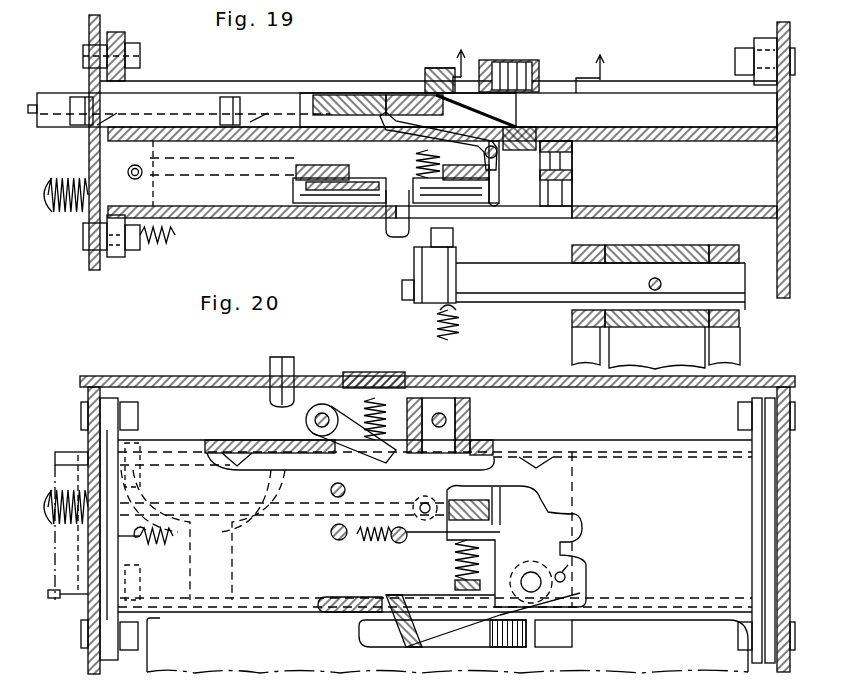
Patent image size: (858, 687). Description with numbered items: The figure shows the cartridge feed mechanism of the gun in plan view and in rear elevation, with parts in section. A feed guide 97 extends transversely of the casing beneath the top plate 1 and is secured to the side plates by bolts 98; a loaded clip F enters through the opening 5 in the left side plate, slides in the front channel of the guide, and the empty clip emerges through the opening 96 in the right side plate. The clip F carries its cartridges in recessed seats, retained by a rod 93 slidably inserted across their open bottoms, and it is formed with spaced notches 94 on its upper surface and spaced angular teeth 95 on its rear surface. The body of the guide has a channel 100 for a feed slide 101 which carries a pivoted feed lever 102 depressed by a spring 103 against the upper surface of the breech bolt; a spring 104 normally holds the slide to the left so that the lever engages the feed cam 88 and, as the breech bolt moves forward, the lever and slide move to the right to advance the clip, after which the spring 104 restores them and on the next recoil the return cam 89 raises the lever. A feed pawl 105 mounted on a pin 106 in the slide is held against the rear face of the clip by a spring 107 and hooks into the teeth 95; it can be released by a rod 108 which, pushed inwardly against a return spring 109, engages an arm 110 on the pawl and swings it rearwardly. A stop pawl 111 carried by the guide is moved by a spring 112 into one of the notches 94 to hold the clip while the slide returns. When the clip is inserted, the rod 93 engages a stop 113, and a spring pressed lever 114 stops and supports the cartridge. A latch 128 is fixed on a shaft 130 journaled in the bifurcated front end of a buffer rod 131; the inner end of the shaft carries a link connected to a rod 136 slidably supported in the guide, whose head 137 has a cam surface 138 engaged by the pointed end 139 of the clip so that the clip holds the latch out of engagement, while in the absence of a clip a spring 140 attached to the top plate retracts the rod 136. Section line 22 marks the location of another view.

In FIG. 19, the opening 5 is at (89, 28).
In FIG. 19, the clip F is at (57, 95).
In FIG. 19, the notches 94 is at (236, 101).
In FIG. 20, the notches 94 is at (238, 456).
In FIG. 19, the bolts 98 is at (133, 56).
In FIG. 19, the opening 96 is at (777, 113).
In FIG. 19, the feed slide 101 is at (212, 164).
In FIG. 19, the return spring 109 is at (73, 214).
In FIG. 20, the return spring 109 is at (98, 476).
In FIG. 19, the spring 104 is at (160, 247).
In FIG. 20, the spring 104 is at (160, 546).
In FIG. 19, the angular teeth 95 is at (385, 98).
In FIG. 19, the pointed end 139 is at (486, 110).
In FIG. 19, the head 137 is at (428, 72).
In FIG. 20, the head 137 is at (470, 438).
In FIG. 19, the cam surface 138 is at (440, 68).
In FIG. 19, the section line 22 is at (530, 68).
In FIG. 19, the spring pressed lever 114 is at (495, 66).
In FIG. 19, the feed pawl 105 is at (438, 141).
In FIG. 20, the feed pawl 105 is at (502, 540).
In FIG. 19, the pin 106 is at (516, 140).
In FIG. 19, the spring 107 is at (416, 160).
In FIG. 20, the spring 107 is at (431, 498).
In FIG. 19, the arm 110 is at (499, 190).
In FIG. 20, the arm 110 is at (500, 513).
In FIG. 19, the feed lever 102 is at (566, 180).
In FIG. 20, the feed lever 102 is at (483, 620).
In FIG. 19, the channel 100 is at (631, 173).
In FIG. 19, the rod 108 is at (481, 200).
In FIG. 20, the rod 108 is at (462, 512).
In FIG. 19, the rod 136 is at (455, 235).
In FIG. 20, the rod 136 is at (458, 420).
In FIG. 19, the shaft 130 is at (573, 277).
In FIG. 19, the spring 140 is at (460, 328).
In FIG. 19, the buffer rod 131 is at (572, 357).
In FIG. 19, the latch 128 is at (657, 348).
In FIG. 20, the top plate 1 is at (218, 378).
In FIG. 20, the feed guide 97 is at (435, 529).
In FIG. 20, the rod 93 is at (55, 600).
In FIG. 20, the stop pawl 111 is at (306, 420).
In FIG. 20, the spring 112 is at (363, 410).
In FIG. 20, the spring 103 is at (455, 570).
In FIG. 20, the stop 113 is at (360, 613).
In FIG. 20, the return cam 89 is at (490, 640).
In FIG. 20, the feed cam 88 is at (562, 646).